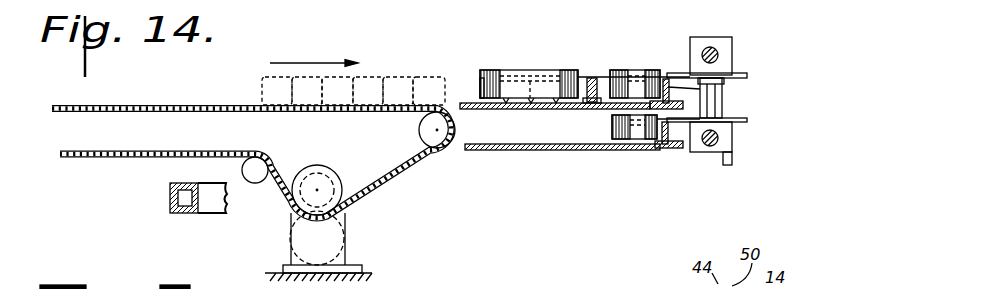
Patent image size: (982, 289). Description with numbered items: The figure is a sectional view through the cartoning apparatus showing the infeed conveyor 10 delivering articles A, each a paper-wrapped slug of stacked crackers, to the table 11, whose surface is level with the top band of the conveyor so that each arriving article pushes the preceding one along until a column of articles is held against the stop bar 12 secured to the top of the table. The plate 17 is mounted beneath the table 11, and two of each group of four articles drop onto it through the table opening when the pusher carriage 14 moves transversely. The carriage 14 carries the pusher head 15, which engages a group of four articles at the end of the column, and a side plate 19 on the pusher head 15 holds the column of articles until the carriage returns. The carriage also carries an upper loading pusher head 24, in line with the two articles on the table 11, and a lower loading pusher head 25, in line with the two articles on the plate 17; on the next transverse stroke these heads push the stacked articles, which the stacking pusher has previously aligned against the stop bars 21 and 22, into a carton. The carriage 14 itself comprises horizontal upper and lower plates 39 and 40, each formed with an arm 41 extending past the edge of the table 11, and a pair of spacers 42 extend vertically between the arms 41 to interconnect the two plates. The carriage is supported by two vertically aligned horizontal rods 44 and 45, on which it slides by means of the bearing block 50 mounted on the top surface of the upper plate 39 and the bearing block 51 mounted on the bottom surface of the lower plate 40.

The infeed conveyor 10 is at (165, 105).
The article A is at (428, 74).
The table 11 is at (537, 107).
The plate 17 is at (540, 151).
The pusher head 15 is at (514, 68).
The side plate 19 is at (478, 84).
The stop bar 12 is at (592, 78).
The upper loading pusher head 24 is at (627, 80).
The lower loading pusher head 25 is at (633, 128).
The upper plate 39 is at (667, 79).
The stop bar 22 is at (667, 130).
The lower plate 40 is at (670, 122).
The bearing block 50 is at (727, 50).
The rod 44 is at (712, 50).
The pusher carriage 14 is at (743, 62).
The arm 41 is at (752, 74).
The spacer 42 is at (722, 101).
The stop bar 21 is at (668, 88).
The rod 45 is at (722, 139).
The bearing block 51 is at (731, 153).